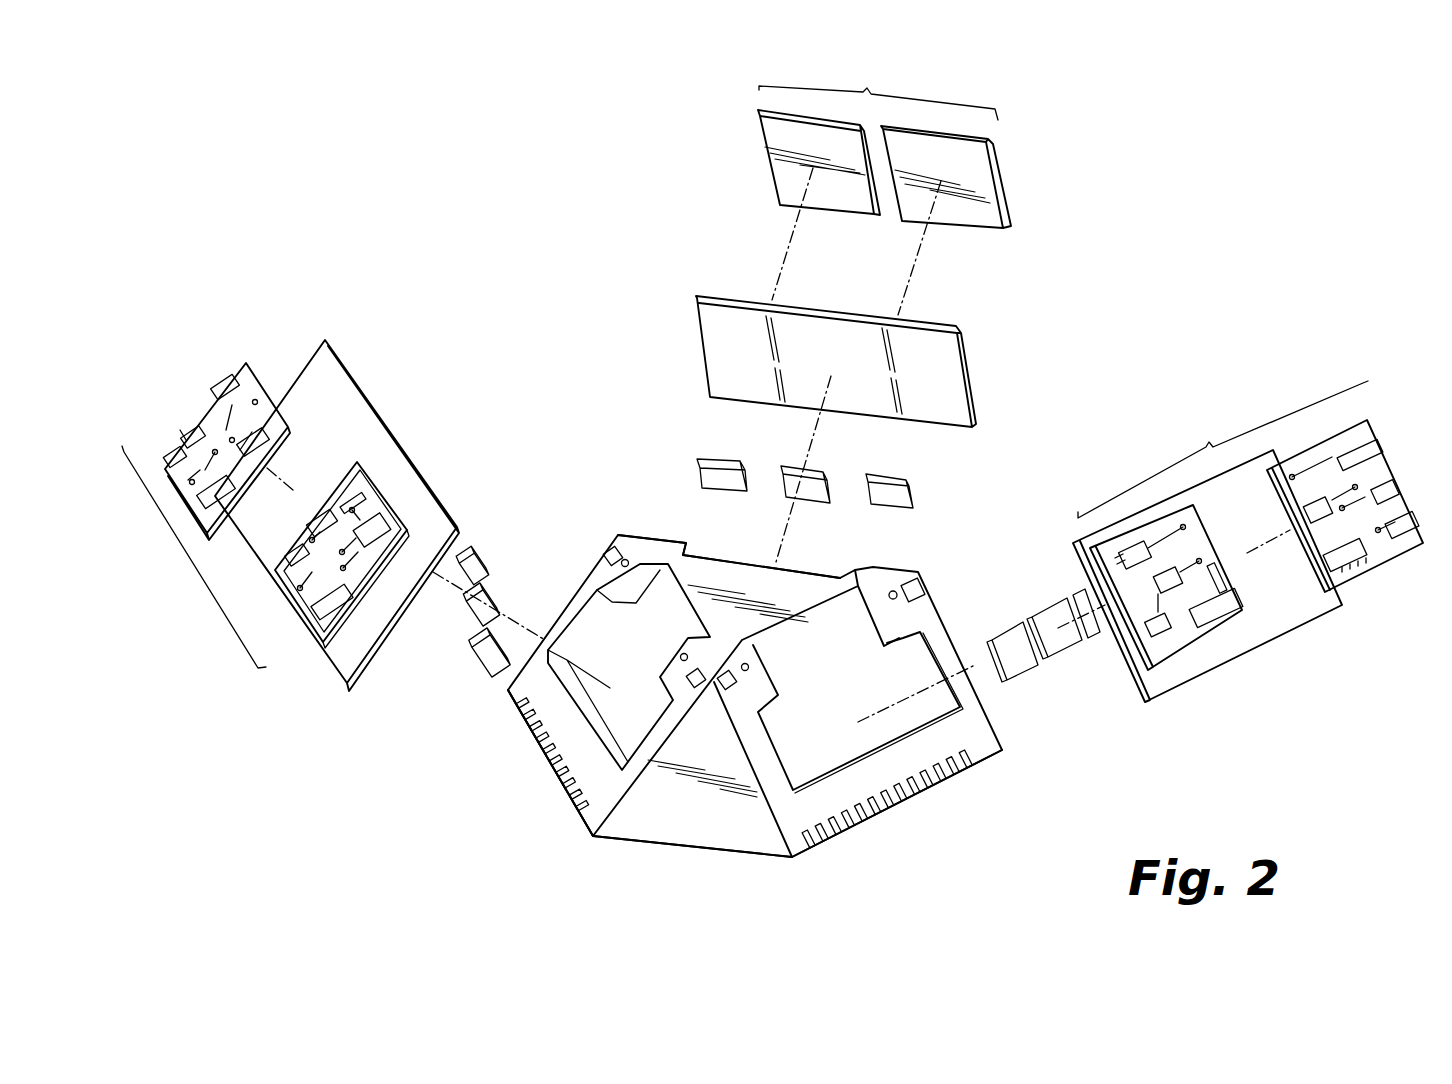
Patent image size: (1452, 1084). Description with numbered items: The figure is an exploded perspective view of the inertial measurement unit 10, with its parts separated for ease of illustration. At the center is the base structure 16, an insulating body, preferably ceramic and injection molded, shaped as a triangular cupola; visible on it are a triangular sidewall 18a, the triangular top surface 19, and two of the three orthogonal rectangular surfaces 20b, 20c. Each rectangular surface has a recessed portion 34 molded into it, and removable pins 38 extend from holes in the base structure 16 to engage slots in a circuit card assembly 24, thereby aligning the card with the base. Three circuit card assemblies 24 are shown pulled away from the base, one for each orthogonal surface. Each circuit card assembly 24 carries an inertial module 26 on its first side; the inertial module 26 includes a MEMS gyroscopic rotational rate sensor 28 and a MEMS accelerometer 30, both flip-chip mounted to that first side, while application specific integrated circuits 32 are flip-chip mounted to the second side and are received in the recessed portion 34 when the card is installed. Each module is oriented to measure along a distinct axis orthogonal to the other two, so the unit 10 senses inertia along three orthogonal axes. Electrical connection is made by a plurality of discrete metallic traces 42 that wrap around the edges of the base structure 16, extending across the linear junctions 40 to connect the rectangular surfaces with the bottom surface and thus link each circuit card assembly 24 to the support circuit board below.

The inertial measurement unit 10 is at (463, 196).
The base structure 16 is at (665, 828).
The triangular sidewall 18a is at (738, 847).
The triangular top surface 19 is at (677, 545).
The rectangular surface 20b is at (739, 556).
The rectangular surface 20c is at (612, 783).
The circuit card assembly 24 is at (316, 357).
The inertial module 26 is at (179, 581).
The gyroscopic rotational rate sensor 28 is at (240, 362).
The accelerometer 30 is at (325, 634).
The application specific integrated circuit 32 is at (472, 566).
The recessed portion 34 is at (607, 645).
The removable pins 38 is at (622, 560).
The linear junctions 40 is at (555, 757).
The metallic traces 42 is at (510, 715).